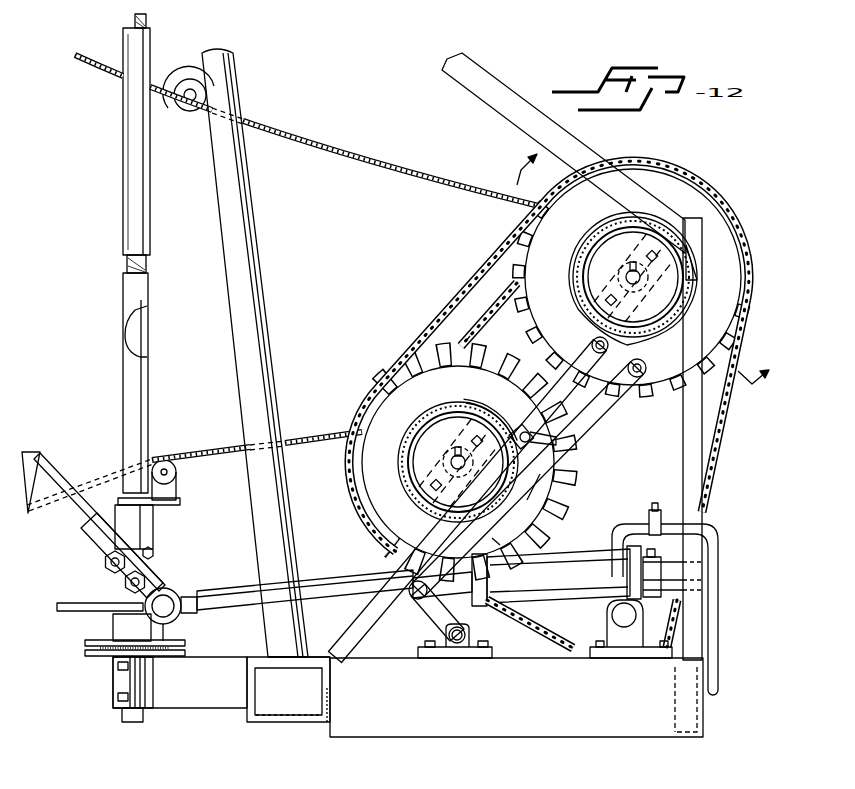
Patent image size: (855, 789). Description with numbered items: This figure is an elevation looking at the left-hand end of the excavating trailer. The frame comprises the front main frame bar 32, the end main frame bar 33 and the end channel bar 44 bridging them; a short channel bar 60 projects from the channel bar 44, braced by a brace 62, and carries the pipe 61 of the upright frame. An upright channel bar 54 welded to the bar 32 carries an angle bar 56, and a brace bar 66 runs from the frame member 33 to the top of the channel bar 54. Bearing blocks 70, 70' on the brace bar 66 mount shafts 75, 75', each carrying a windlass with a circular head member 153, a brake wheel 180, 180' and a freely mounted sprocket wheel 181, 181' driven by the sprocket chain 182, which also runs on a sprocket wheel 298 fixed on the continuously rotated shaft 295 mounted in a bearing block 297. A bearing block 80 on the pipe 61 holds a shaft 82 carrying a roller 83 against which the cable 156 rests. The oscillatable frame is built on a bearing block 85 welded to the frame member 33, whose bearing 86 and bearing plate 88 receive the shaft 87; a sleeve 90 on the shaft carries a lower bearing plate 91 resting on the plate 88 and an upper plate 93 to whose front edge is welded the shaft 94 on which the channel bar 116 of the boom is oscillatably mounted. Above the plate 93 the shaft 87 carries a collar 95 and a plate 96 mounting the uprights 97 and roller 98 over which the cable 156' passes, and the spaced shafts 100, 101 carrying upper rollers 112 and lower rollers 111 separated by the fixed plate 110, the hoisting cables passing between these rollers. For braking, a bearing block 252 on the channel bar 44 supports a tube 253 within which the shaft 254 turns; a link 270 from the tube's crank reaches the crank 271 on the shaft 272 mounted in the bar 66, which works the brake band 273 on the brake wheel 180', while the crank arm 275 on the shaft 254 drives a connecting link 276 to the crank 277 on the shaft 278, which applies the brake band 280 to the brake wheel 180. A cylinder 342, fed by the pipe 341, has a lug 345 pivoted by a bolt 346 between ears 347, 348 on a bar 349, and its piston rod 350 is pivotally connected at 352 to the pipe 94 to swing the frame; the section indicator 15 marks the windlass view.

The shaft 101 is at (147, 24).
The roller 83 is at (184, 84).
The shaft 82 is at (185, 102).
The bearing block 80 is at (190, 112).
The upper roller 112 is at (150, 188).
The fixed plate 110 is at (148, 260).
The shaft 100 is at (140, 333).
The lower roller 111 is at (148, 375).
The roller 98 is at (177, 472).
The uprights 97 is at (177, 491).
The plate 96 is at (180, 504).
The collar 95 is at (153, 532).
The shaft 87 is at (153, 553).
The shaft 94 is at (167, 594).
The pivotal connection 352 is at (188, 598).
The piston rod 350 is at (318, 588).
The channel bar 116 is at (65, 540).
The plate 93 is at (80, 602).
The sleeve 90 is at (113, 624).
The bearing plate 91 is at (88, 643).
The bearing plate 88 is at (88, 656).
The bearing 86 is at (115, 688).
The bearing block 85 is at (214, 704).
The pipe 61 is at (292, 538).
The channel bar 60 is at (334, 661).
The brace 62 is at (331, 697).
The main frame bar 33 is at (290, 722).
The end channel bar 44 is at (640, 738).
The main frame bar 32 is at (712, 732).
The brace bar 66 is at (331, 631).
The shaft 278 is at (592, 346).
The crank 271 is at (590, 427).
The link 270 is at (532, 490).
The connecting link 276 is at (492, 540).
The crank 277 is at (641, 366).
The crank arm 275 is at (424, 616).
The shaft 254 is at (466, 634).
The tube 253 is at (448, 650).
The bearing block 252 is at (478, 658).
The cylinder 342 is at (556, 552).
The bolt 346 is at (655, 537).
The lug 345 is at (718, 530).
The pipe 341 is at (720, 560).
The ear 347 is at (703, 564).
The bar 349 is at (703, 581).
The ear 348 is at (703, 591).
The sprocket wheel 298 is at (572, 612).
The shaft 295 is at (623, 627).
The bearing block 297 is at (626, 658).
The upright channel bar 54 is at (703, 300).
The angle bar 56 is at (500, 92).
The circular head member 153 is at (707, 194).
The sprocket chain 182 is at (447, 303).
The sprocket wheel 181 is at (489, 314).
The sprocket wheel 181' is at (479, 331).
The brake wheel 180 is at (616, 277).
The bearing block 70 is at (623, 277).
The shaft 75 is at (636, 255).
The brake band 280 is at (578, 310).
The brake wheel 180' is at (458, 450).
The bearing block 70' is at (443, 462).
The shaft 75' is at (444, 444).
The brake band 273 is at (510, 420).
The shaft 272 is at (525, 431).
The cable 156 is at (309, 131).
The cable 156' is at (194, 460).
The view arrow 15 is at (631, 279).